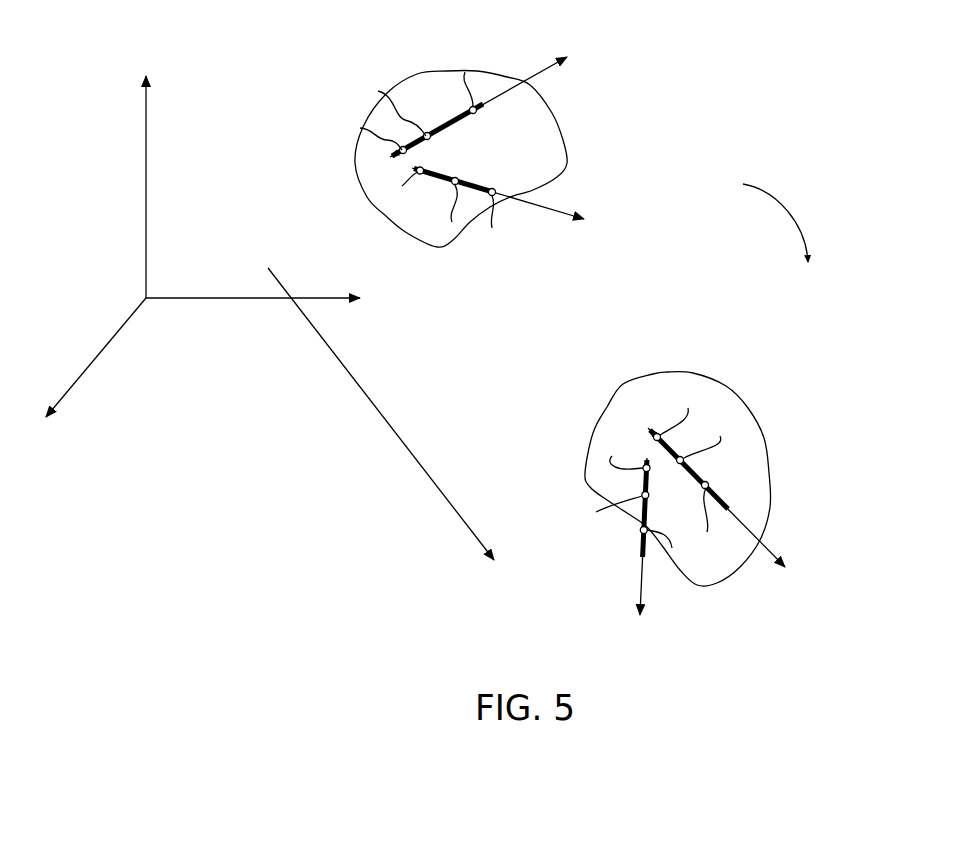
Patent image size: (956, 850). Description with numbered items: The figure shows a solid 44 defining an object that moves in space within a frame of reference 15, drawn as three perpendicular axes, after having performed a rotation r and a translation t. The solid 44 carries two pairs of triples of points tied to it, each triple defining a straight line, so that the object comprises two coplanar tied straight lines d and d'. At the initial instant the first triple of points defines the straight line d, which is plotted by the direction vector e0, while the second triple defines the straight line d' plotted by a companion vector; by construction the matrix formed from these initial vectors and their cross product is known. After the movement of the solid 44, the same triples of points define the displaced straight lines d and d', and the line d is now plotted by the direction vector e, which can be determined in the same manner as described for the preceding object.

The frame of reference 15 is at (174, 338).
The solid 44 is at (568, 332).
The translation t is at (381, 414).
The rotation r is at (782, 211).
The direction vector of straight line d at initial instant e0 is at (478, 99).
The direction vector of straight line d after movement e is at (726, 504).